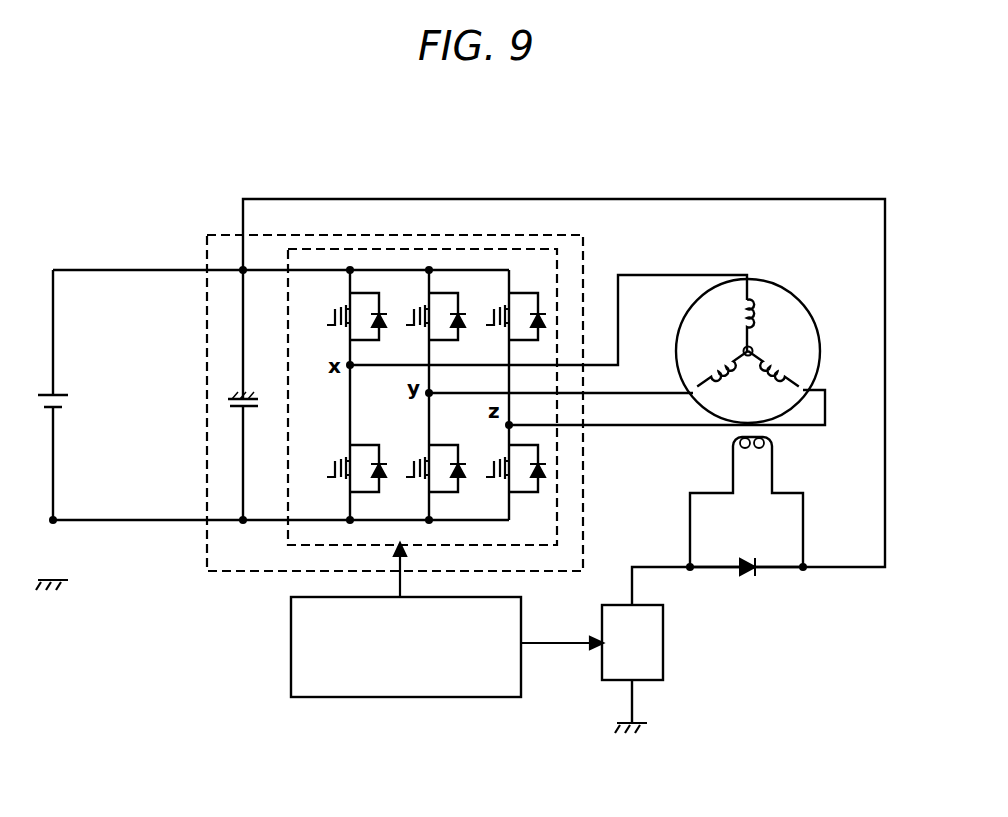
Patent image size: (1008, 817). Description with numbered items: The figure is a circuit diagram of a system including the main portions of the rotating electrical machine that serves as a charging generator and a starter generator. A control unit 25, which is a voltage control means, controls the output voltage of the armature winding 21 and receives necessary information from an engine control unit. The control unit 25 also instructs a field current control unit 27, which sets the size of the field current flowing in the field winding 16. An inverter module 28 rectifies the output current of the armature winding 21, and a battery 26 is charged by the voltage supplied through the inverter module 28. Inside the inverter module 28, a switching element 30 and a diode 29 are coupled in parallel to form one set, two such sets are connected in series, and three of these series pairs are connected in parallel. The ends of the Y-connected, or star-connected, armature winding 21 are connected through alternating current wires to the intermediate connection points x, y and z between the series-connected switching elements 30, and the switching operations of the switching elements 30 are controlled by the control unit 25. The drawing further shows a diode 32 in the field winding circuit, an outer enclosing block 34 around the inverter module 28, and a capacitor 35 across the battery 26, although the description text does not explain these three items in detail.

The field winding 16 is at (777, 448).
The armature winding 21 is at (760, 302).
The control unit 25 is at (408, 680).
The battery 26 is at (70, 398).
The field current control unit 27 is at (663, 640).
The inverter module 28 is at (478, 249).
The diode 29 is at (382, 328).
The switching element 30 is at (327, 325).
The diode 32 is at (752, 574).
The inverter module 34 is at (397, 235).
The smoothing capacitor 35 is at (238, 408).